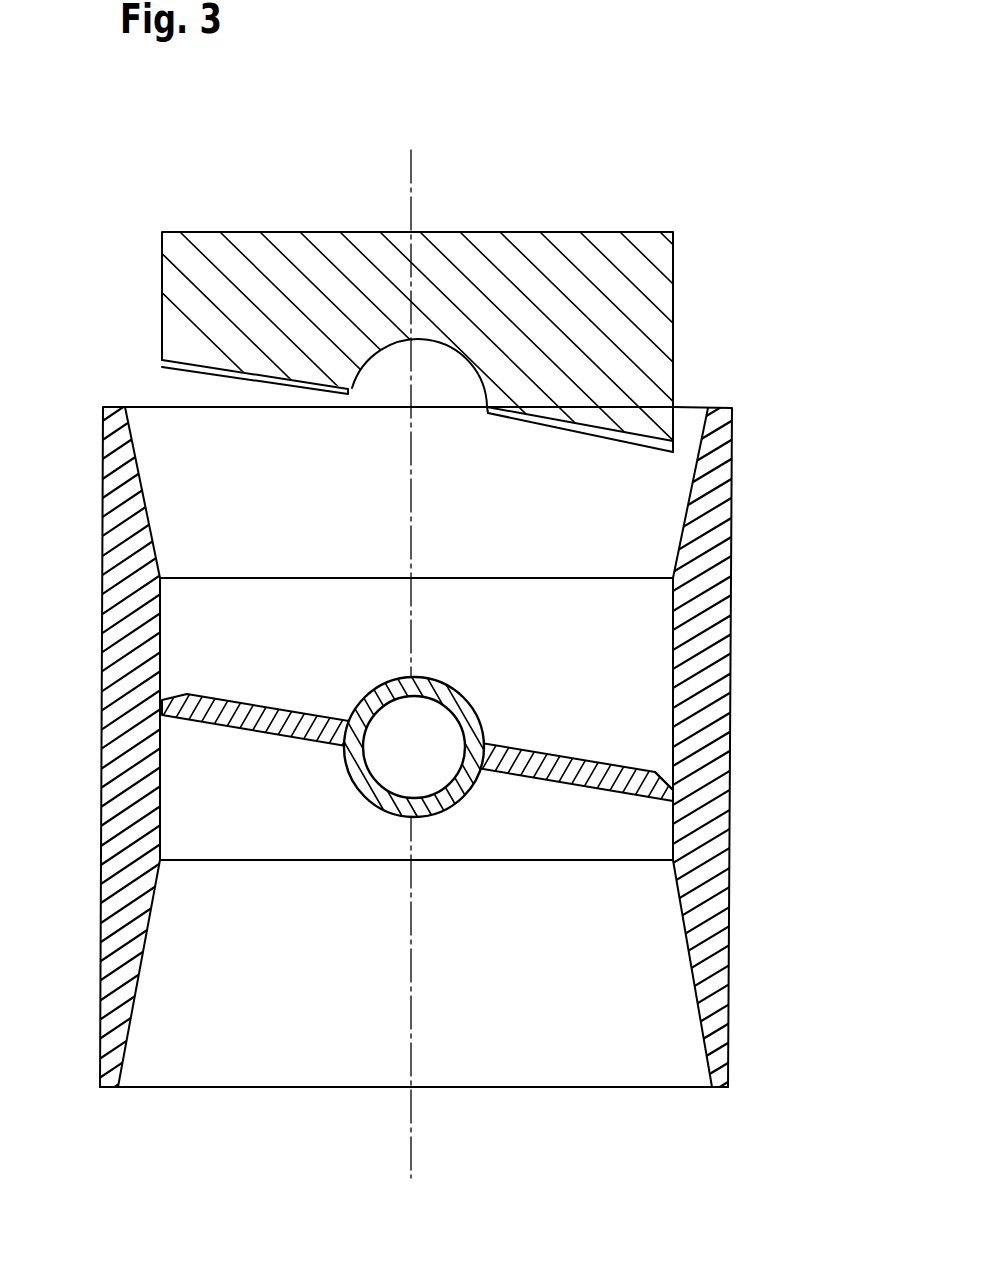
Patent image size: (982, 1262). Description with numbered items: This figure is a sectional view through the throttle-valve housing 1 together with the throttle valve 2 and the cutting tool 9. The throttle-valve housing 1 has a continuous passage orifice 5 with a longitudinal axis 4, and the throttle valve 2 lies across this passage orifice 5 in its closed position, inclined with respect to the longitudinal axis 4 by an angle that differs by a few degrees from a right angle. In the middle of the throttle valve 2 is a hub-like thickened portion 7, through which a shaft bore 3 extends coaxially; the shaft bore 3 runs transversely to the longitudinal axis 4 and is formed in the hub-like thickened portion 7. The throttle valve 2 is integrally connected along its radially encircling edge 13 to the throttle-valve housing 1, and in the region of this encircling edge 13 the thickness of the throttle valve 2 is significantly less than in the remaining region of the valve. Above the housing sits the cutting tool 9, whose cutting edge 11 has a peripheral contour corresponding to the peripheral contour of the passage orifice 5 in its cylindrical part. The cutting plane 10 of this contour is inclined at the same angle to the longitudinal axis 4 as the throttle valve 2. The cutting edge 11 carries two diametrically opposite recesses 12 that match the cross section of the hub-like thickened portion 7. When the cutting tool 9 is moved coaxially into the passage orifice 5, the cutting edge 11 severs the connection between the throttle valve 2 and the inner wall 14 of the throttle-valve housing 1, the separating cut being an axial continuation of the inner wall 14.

The throttle-valve housing 1 is at (708, 524).
The throttle valve 2 is at (592, 762).
The shaft bore 3 is at (433, 725).
The longitudinal axis 4 is at (410, 1100).
The passage orifice 5 is at (214, 1050).
The hub-like thickened portion 7 is at (430, 800).
The cutting tool 9 is at (557, 263).
The cutting plane 10 is at (233, 376).
The cutting edge 11 is at (162, 362).
The recess 12 is at (387, 377).
The encircling edge 13 is at (672, 793).
The inner wall 14 is at (673, 827).